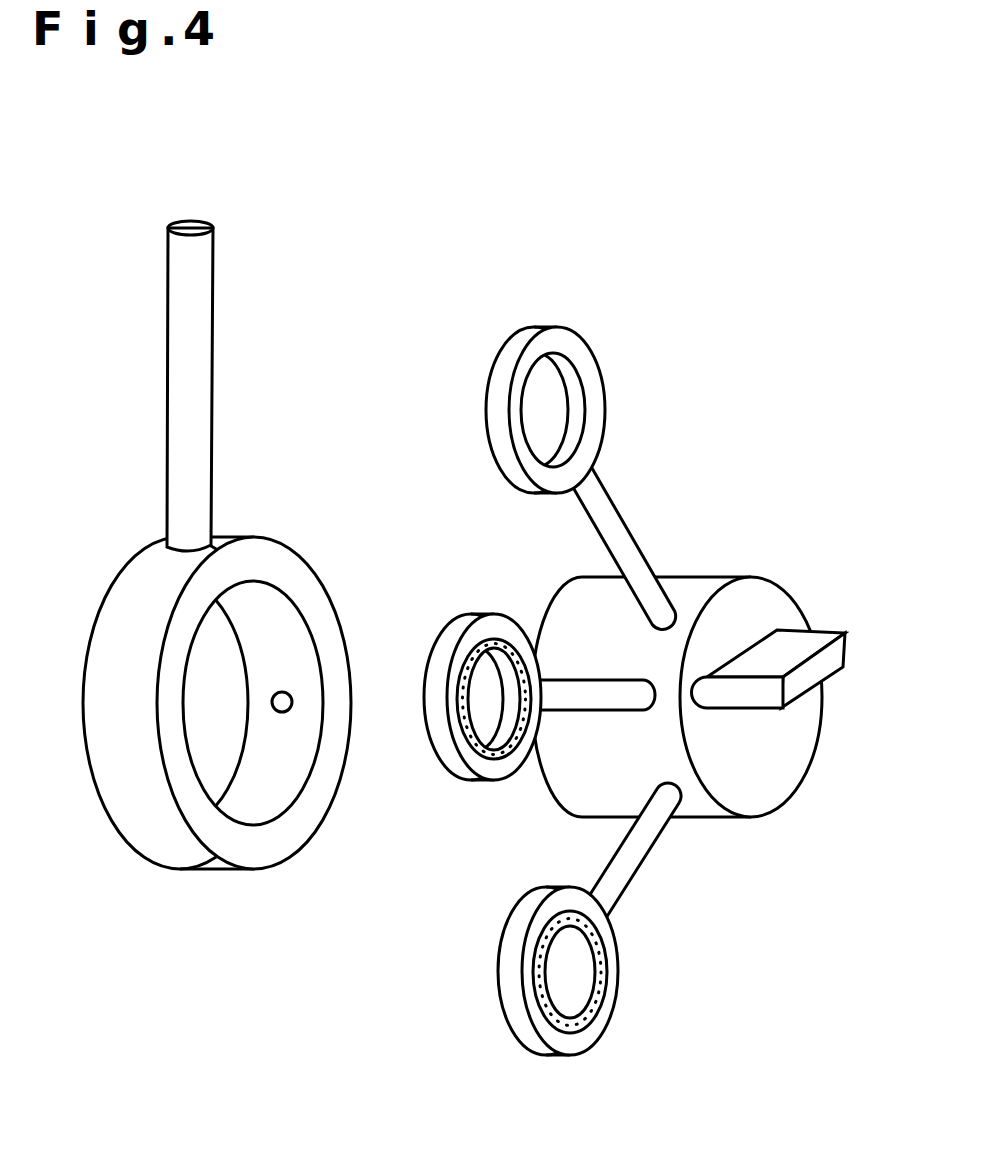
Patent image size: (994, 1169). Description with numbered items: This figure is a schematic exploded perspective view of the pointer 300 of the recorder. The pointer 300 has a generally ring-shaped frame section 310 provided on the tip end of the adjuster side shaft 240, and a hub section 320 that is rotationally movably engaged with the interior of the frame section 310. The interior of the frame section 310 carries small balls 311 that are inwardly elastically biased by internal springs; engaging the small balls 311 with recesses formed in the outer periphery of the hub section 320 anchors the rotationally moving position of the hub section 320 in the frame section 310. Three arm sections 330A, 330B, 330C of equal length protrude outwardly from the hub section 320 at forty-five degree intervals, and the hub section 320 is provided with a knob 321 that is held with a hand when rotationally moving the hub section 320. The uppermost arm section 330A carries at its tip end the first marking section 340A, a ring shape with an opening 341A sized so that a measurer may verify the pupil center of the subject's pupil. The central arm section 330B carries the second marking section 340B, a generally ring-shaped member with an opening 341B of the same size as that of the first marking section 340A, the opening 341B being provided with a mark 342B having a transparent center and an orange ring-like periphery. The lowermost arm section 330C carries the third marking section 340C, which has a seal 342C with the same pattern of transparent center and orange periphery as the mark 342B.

The adjuster side shaft 240 is at (186, 411).
The pointer 300 is at (577, 725).
The frame section 310 is at (190, 858).
The small balls 311 is at (276, 712).
The hub section 320 is at (748, 798).
The knob 321 is at (843, 668).
The arm section 330A is at (613, 523).
The arm section 330B is at (580, 683).
The arm section 330C is at (625, 902).
The first marking section 340A is at (600, 373).
The second marking section 340B is at (465, 782).
The third marking section 340C is at (505, 1033).
The opening 341A is at (533, 400).
The opening 341B is at (485, 665).
The mark 342B is at (467, 745).
The seal 342C is at (582, 1018).